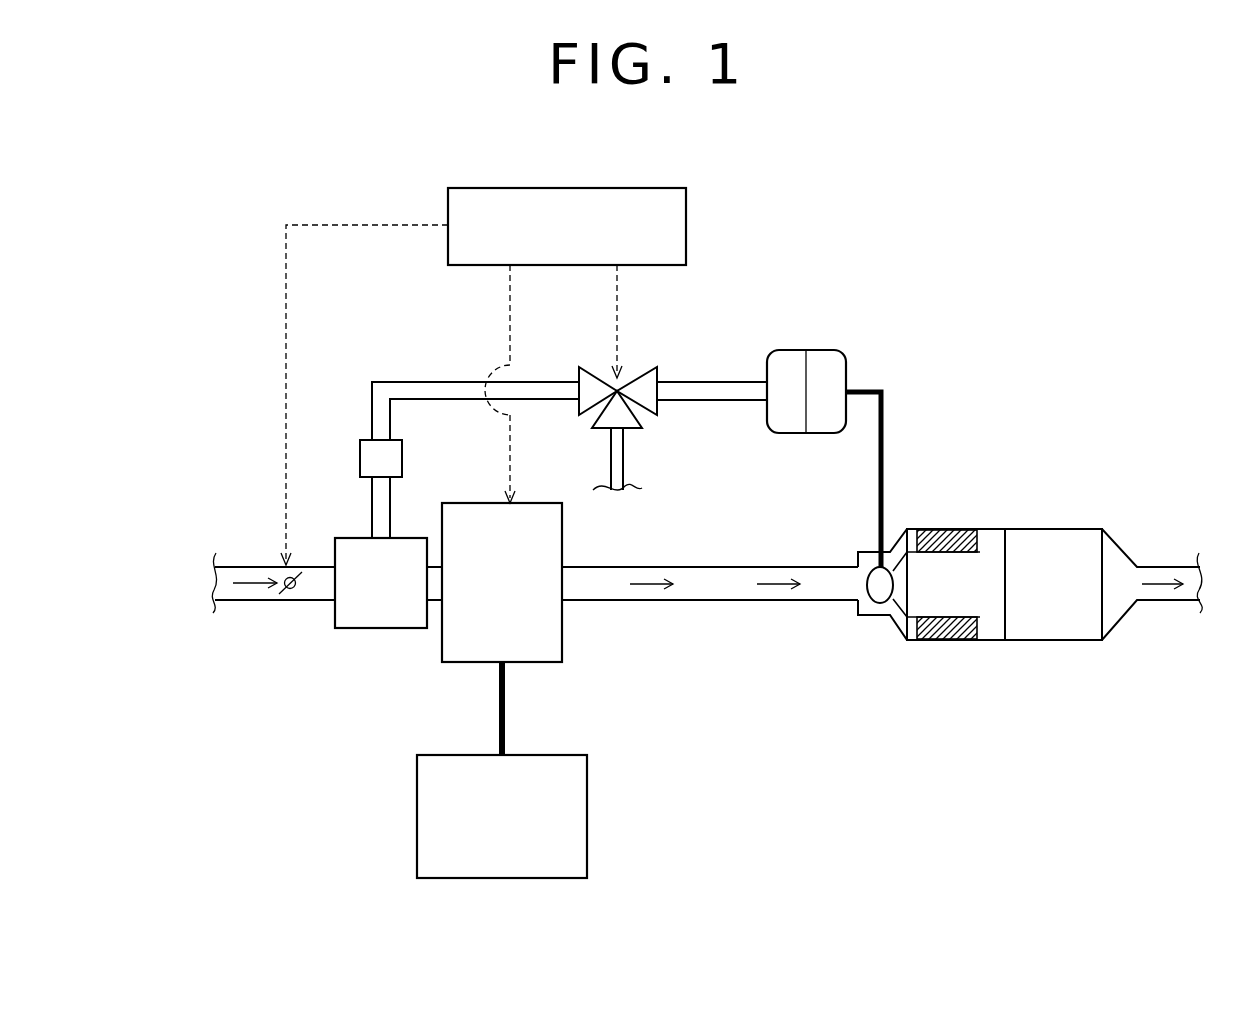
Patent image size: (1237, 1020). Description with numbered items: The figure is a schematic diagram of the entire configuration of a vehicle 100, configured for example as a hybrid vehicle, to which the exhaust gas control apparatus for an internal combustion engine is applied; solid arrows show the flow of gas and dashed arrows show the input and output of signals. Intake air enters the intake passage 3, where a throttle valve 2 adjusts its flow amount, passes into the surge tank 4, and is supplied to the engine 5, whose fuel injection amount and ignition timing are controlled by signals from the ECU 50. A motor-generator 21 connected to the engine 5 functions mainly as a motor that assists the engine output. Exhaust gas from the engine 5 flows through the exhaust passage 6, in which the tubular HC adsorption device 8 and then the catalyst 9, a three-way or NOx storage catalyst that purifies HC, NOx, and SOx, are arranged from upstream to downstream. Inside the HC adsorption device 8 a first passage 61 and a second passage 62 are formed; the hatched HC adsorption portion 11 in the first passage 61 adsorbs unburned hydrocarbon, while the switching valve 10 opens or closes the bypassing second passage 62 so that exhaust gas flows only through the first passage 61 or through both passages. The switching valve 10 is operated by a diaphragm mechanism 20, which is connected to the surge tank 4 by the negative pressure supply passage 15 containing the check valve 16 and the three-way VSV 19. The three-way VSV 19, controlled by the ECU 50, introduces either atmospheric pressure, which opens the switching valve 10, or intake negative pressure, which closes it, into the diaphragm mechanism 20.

The vehicle 100 is at (819, 182).
The throttle valve 2 is at (296, 590).
The intake passage 3 is at (243, 600).
The surge tank 4 is at (345, 628).
The engine 5 is at (468, 662).
The exhaust passage 6 is at (703, 600).
The HC adsorption device 8 is at (930, 525).
The catalyst 9 is at (1030, 628).
The switching valve 10 is at (880, 600).
The HC adsorption portion 11 is at (967, 530).
The negative pressure supply passage 15 is at (718, 380).
The check valve 16 is at (402, 447).
The three-way VSV 19 is at (660, 405).
The diaphragm mechanism 20 is at (860, 370).
The motor-generator 21 is at (417, 812).
The ECU 50 is at (686, 230).
The first passage 61 is at (903, 620).
The second passage 62 is at (952, 585).